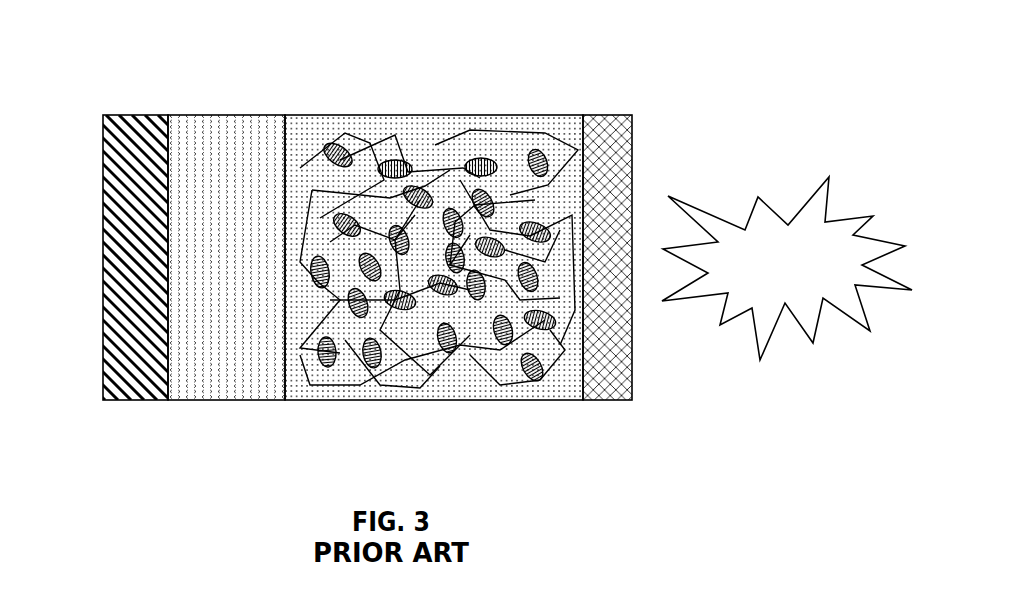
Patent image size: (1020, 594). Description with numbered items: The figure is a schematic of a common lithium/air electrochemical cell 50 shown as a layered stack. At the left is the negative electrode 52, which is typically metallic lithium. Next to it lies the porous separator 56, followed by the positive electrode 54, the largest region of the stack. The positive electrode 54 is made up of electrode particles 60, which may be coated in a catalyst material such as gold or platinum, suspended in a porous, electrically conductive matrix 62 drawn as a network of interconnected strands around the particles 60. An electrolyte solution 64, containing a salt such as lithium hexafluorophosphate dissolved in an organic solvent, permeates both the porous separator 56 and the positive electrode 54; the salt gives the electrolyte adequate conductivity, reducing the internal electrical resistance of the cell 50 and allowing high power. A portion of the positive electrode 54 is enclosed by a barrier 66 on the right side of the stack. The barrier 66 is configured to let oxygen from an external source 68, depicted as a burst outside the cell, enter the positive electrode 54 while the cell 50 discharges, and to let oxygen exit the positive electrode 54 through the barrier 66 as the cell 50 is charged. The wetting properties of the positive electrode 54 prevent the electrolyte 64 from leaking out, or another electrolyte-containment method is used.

The lithium/air electrochemical cell 50 is at (140, 52).
The negative electrode 52 is at (103, 210).
The positive electrode 54 is at (530, 400).
The porous separator 56 is at (213, 400).
The particles 60 is at (330, 150).
The porous, electrically conductive matrix 62 is at (432, 150).
The electrolyte solution 64 is at (427, 385).
The barrier 66 is at (632, 120).
The external source 68 is at (858, 190).